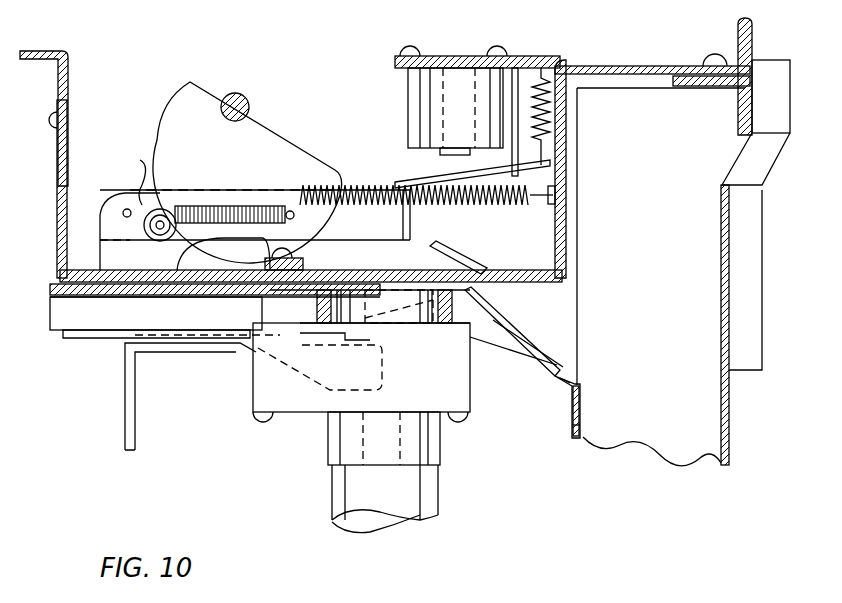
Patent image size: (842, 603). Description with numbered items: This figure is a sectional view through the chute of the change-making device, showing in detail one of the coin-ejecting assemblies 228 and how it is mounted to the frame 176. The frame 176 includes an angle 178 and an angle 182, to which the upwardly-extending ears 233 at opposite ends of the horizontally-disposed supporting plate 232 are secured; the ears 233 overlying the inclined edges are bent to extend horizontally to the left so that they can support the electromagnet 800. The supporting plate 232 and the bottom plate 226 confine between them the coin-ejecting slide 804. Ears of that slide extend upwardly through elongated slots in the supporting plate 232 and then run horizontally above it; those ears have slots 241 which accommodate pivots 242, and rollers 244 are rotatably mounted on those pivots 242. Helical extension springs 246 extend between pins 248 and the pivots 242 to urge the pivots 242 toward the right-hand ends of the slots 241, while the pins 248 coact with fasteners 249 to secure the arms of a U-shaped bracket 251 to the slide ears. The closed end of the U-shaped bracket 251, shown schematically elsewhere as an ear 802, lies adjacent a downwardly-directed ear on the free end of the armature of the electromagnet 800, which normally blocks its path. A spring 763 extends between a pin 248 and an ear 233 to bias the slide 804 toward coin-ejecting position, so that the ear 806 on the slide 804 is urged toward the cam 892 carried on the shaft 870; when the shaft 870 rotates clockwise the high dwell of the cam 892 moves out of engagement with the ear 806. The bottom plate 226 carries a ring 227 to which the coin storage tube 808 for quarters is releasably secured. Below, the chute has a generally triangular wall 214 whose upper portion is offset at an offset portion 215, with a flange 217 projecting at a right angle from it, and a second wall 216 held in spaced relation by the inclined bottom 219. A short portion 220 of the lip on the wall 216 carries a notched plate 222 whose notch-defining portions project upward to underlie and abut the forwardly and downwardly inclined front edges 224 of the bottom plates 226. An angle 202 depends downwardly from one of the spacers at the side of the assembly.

The frame 176 is at (620, 21).
The angle 178 is at (66, 52).
The angle 182 is at (655, 70).
The angle 202 is at (738, 30).
The wall 214 is at (730, 458).
The offset portion 215 is at (752, 120).
The second wall 216 is at (575, 428).
The flange 217 is at (790, 136).
The inclined bottom 219 is at (680, 242).
The short portion 220 is at (566, 382).
The notched plate 222 is at (563, 372).
The front edges 224 is at (508, 325).
The bottom plates 226 is at (222, 298).
The rings 227 is at (317, 308).
The coin-ejecting assemblies 228 is at (340, 136).
The supporting plate 232 is at (366, 272).
The ears 233 is at (56, 205).
The slots 241 is at (128, 208).
The pivots 242 is at (165, 240).
The rollers 244 is at (141, 160).
The helical extension springs 246 is at (214, 238).
The pins 248 is at (297, 205).
The fasteners 249 is at (112, 200).
The U-shaped brackets 251 is at (395, 180).
The spring 763 is at (445, 205).
The electromagnet 800 is at (408, 95).
The ear 802 is at (403, 231).
The coin-ejecting slide 804 is at (112, 290).
The ear 806 is at (97, 245).
The coin storage tube 808 is at (445, 520).
The shaft 870 is at (236, 93).
The cam 892 is at (175, 90).